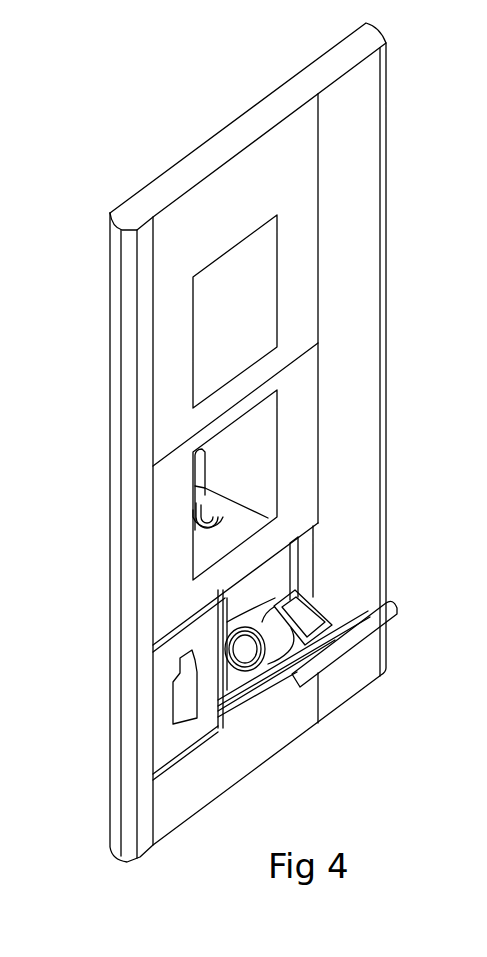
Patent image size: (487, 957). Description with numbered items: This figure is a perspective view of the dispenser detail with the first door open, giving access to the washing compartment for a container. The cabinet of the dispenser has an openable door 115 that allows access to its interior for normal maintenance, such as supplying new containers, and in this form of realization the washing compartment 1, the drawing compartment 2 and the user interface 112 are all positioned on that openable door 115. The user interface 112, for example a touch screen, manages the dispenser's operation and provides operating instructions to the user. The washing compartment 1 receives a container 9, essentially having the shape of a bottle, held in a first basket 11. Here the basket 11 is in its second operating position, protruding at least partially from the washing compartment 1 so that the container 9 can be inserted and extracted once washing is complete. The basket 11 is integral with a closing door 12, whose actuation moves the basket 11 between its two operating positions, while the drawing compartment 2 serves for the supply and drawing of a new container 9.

The openable door 115 is at (239, 121).
The user interface 112 is at (233, 283).
The container 9 is at (199, 492).
The washing compartment 1 is at (262, 587).
The first basket 11 is at (328, 610).
The closing door 12 is at (373, 629).
The drawing compartment 2 is at (167, 742).